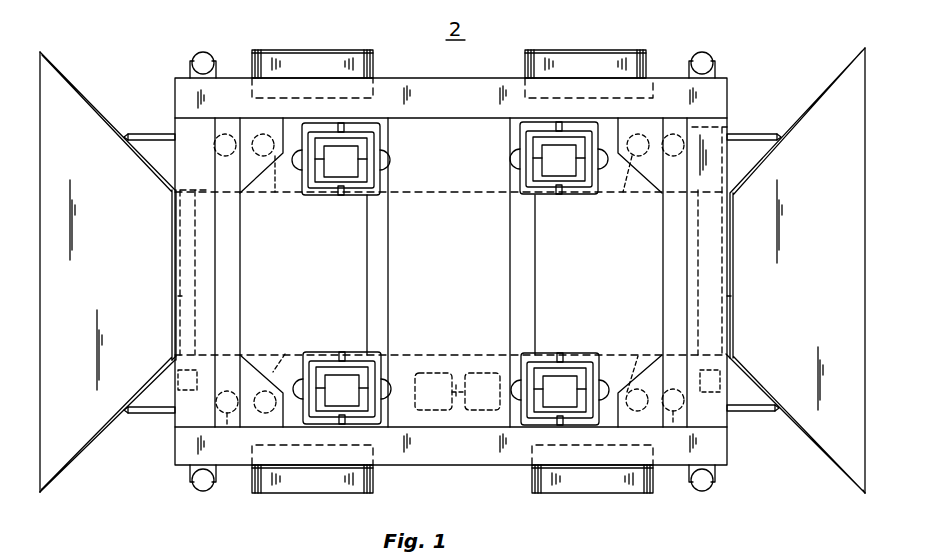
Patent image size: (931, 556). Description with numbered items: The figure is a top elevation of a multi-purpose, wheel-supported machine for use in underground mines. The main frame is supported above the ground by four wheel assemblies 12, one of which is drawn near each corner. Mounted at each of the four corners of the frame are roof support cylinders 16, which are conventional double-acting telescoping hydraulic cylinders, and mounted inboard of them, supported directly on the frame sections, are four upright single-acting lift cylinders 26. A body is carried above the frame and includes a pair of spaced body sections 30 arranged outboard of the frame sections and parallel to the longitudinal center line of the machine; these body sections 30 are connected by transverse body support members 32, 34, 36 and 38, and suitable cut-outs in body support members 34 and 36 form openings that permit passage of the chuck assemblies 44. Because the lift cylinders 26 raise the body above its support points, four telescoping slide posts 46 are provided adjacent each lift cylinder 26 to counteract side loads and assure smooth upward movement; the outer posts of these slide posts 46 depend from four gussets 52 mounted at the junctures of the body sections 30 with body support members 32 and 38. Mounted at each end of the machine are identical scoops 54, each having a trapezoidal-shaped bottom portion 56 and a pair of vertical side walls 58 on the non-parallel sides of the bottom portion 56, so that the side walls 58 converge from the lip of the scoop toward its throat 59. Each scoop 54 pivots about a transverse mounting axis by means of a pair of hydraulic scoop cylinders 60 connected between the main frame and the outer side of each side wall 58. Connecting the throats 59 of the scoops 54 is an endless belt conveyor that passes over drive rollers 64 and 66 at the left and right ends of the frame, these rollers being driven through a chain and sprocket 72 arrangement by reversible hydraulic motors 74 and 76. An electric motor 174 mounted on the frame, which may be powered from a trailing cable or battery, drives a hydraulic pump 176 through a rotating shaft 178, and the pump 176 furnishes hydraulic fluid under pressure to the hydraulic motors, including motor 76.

The wheel assembly 12 is at (330, 50).
The roof support cylinder 16 is at (208, 52).
The lift cylinder 26 is at (215, 156).
The body section 30 is at (485, 86).
The transverse body support member 32 is at (240, 249).
The transverse body support member 34 is at (388, 269).
The transverse body support member 36 is at (510, 263).
The transverse body support member 38 is at (659, 249).
The chuck assembly 44 is at (350, 196).
The telescoping slide post 46 is at (451, 272).
The gusset 52 is at (250, 126).
The scoop 54 is at (36, 66).
The bottom portion 56 is at (42, 470).
The side wall 58 is at (78, 82).
The throat 59 is at (170, 249).
The scoop cylinder 60 is at (147, 133).
The drive roller 64 is at (176, 297).
The drive roller 66 is at (730, 297).
The sprocket 72 is at (172, 360).
The reversible hydraulic motor 74 is at (176, 380).
The reversible hydraulic motor 76 is at (722, 382).
The electric motor 174 is at (432, 372).
The hydraulic pump 176 is at (488, 372).
The rotating shaft 178 is at (458, 384).